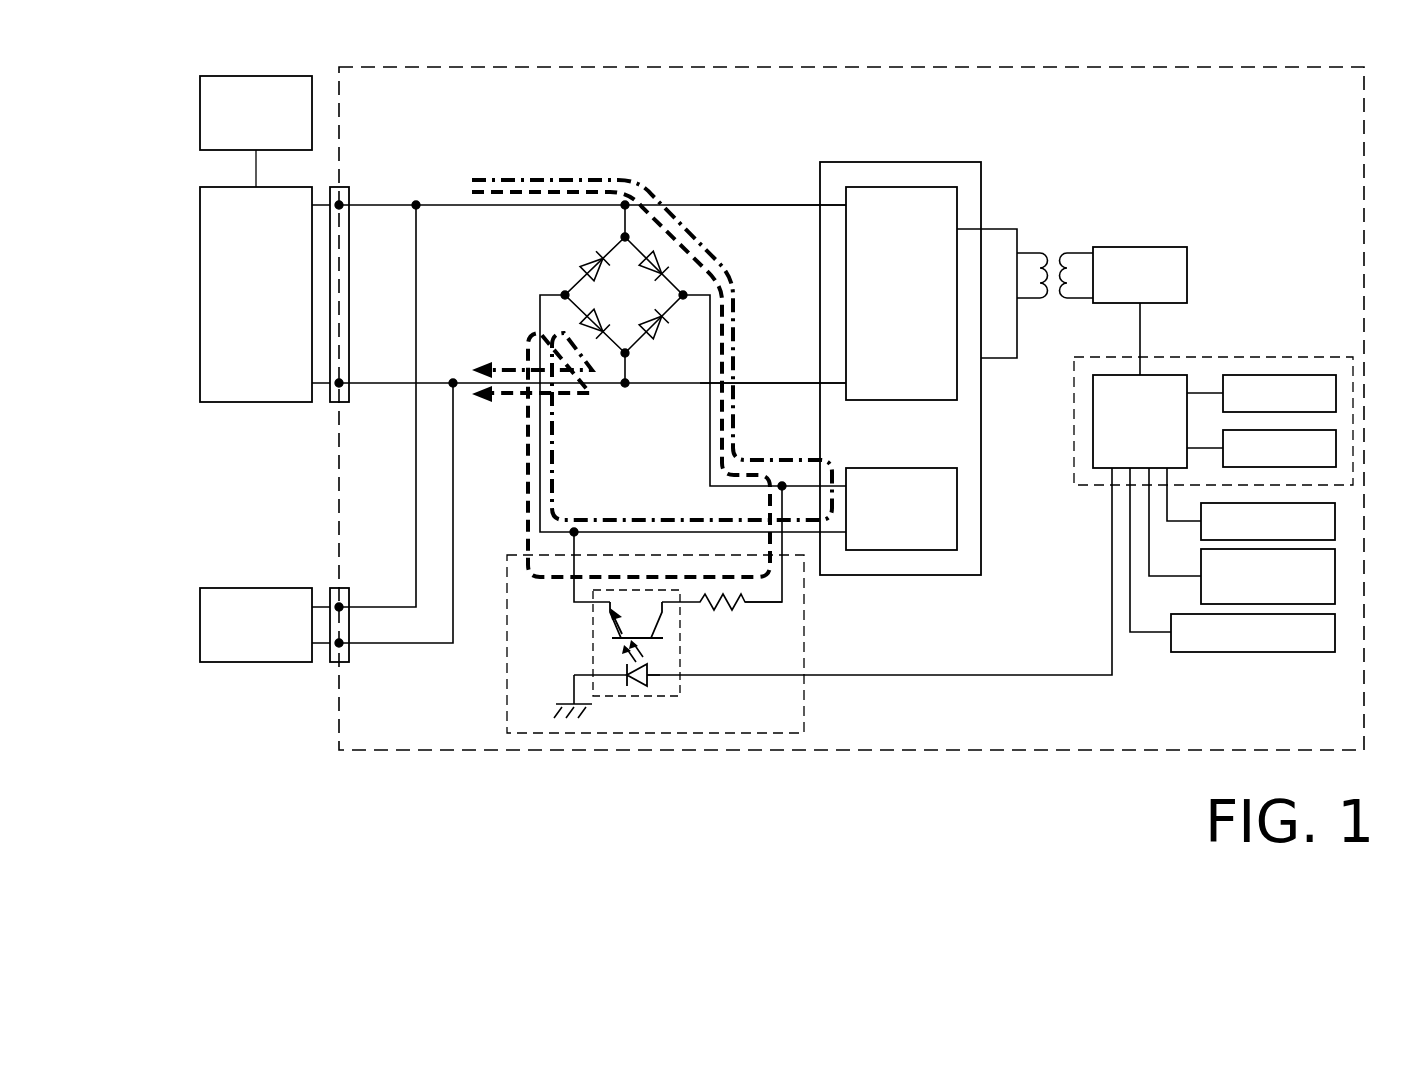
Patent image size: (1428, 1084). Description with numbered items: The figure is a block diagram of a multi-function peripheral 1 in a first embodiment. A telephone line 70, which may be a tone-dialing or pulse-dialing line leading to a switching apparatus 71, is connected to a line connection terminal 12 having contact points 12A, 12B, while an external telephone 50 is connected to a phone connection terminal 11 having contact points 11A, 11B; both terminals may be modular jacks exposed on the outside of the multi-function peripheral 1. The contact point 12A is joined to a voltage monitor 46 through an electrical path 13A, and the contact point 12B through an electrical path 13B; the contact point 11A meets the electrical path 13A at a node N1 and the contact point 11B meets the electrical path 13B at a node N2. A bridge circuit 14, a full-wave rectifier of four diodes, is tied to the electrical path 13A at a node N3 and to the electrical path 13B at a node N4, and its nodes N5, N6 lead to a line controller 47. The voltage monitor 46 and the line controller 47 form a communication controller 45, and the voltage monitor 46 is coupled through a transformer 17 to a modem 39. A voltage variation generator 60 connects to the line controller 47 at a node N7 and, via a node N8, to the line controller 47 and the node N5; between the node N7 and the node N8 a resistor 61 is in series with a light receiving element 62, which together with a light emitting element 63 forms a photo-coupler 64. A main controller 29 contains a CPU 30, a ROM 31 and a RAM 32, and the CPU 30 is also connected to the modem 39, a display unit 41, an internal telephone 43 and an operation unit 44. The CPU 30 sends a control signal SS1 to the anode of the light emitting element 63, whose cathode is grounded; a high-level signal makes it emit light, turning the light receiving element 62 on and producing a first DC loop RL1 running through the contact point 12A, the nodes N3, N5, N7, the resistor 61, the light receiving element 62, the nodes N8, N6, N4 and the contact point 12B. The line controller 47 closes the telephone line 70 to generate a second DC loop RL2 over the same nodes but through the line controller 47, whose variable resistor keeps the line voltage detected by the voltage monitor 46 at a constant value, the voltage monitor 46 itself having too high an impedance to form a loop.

The multi-function peripheral 1 is at (1268, 67).
The phone connection terminal 11 is at (329, 625).
The contact point 11A is at (343, 602).
The contact point 11B is at (345, 656).
The line connection terminal 12 is at (350, 215).
The contact point 12A is at (342, 200).
The contact point 12B is at (342, 395).
The electrical path 13A is at (778, 204).
The electrical path 13B is at (775, 386).
The bridge circuit 14 is at (572, 255).
The transformer 17 is at (1058, 301).
The main controller 29 is at (1292, 357).
The CPU 30 is at (1165, 375).
The ROM 31 is at (1336, 393).
The RAM 32 is at (1336, 448).
The modem 39 is at (1158, 247).
The display unit 41 is at (1335, 521).
The internal telephone 43 is at (1335, 576).
The operation unit 44 is at (1335, 632).
The communication controller 45 is at (863, 162).
The voltage monitor 46 is at (923, 187).
The line controller 47 is at (922, 550).
The external telephone 50 is at (278, 588).
The voltage variation generator 60 is at (806, 655).
The resistor 61 is at (720, 608).
The light receiving element 62 is at (612, 628).
The light emitting element 63 is at (640, 688).
The photo-coupler 64 is at (682, 650).
The telephone line 70 is at (268, 402).
The switching apparatus 71 is at (277, 76).
The node N1 is at (420, 208).
The node N2 is at (455, 378).
The node N3 is at (628, 201).
The node N4 is at (627, 388).
The node N5 is at (685, 300).
The node N6 is at (563, 292).
The node N7 is at (784, 483).
The node N8 is at (575, 528).
The first direct-current loop RL1 is at (553, 580).
The second direct-current loop RL2 is at (636, 518).
The control signal SS1 is at (965, 677).